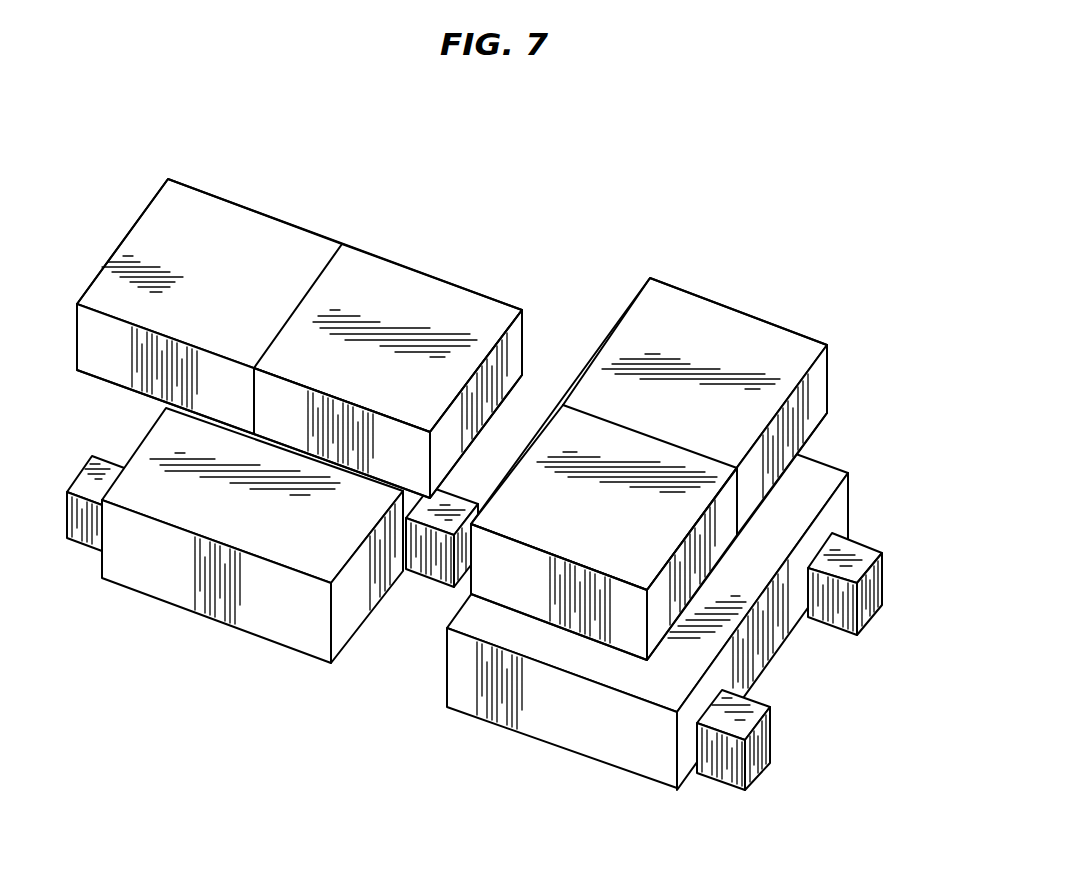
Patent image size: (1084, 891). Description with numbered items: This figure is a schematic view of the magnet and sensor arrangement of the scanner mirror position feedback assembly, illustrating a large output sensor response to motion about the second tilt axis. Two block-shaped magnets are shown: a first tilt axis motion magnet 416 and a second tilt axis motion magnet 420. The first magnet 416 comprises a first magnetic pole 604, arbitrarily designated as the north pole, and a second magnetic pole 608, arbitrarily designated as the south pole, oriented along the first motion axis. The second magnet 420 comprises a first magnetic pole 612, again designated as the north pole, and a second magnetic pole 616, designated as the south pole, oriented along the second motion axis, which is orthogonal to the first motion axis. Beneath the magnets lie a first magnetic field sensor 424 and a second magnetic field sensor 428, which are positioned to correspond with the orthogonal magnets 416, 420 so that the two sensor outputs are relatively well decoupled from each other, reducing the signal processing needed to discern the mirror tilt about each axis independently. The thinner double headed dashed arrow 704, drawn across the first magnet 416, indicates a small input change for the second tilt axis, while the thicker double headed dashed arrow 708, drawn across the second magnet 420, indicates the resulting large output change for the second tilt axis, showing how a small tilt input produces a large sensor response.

The first tilt axis motion magnet 416 is at (299, 314).
The second tilt axis motion magnet 420 is at (677, 514).
The first magnetic field sensor 424 is at (234, 652).
The second magnetic field sensor 428 is at (866, 444).
The first magnetic pole 604 is at (135, 248).
The second magnetic pole 608 is at (428, 287).
The first magnetic pole 612 is at (627, 565).
The second magnetic pole 616 is at (680, 302).
The thinner double headed dashed arrow 704 is at (340, 233).
The thicker double headed dashed arrow 708 is at (660, 413).